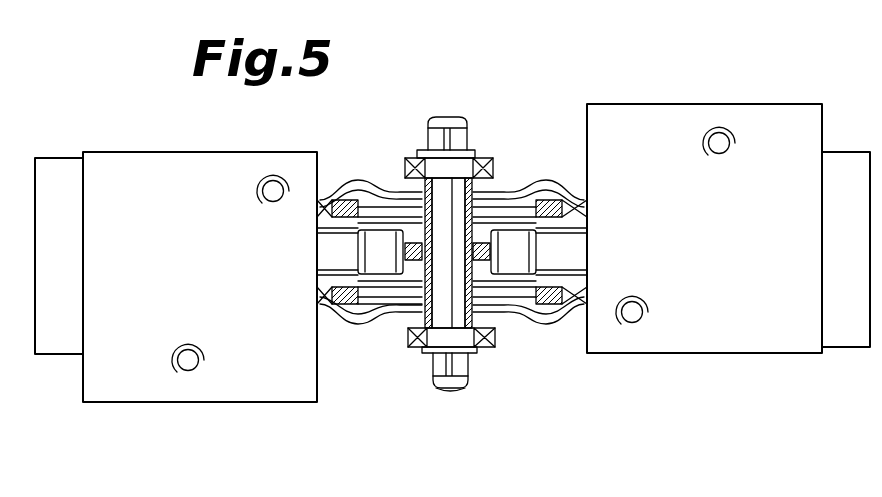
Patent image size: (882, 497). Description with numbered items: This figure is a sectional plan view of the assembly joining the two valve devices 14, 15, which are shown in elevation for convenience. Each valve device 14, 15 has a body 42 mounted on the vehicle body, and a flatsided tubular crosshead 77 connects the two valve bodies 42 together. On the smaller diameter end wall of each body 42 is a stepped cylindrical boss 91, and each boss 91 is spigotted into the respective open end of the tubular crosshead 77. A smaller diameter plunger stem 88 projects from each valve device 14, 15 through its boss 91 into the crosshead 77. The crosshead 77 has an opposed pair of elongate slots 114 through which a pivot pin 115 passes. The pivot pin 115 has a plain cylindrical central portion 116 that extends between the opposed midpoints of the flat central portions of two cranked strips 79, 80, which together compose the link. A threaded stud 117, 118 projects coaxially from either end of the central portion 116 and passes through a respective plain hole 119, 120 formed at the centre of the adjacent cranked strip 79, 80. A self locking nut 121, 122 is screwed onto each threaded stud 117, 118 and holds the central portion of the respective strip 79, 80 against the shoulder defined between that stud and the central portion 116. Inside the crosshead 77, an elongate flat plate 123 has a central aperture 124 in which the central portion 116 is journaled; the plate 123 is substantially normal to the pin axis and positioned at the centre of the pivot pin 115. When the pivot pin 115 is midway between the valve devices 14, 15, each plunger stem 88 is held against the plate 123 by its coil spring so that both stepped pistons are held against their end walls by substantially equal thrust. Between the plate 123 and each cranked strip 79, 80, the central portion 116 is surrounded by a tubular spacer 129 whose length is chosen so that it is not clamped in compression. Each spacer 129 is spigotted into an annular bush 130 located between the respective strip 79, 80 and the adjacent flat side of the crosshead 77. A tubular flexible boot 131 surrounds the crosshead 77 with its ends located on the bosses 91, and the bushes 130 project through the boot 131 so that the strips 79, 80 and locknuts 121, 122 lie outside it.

The valve device 14 is at (728, 211).
The valve device 15 is at (176, 256).
The body 42 is at (222, 160).
The flatsided tubular crosshead 77 is at (354, 206).
The cranked strip 79 is at (492, 160).
The cranked strip 80 is at (490, 338).
The plunger stem 88 is at (330, 233).
The cylindrical boss 91 is at (322, 290).
The elongate slot 114 is at (548, 208).
The pivot pin 115 is at (466, 335).
The plain cylindrical central portion 116 is at (442, 200).
The threaded stud 117 is at (480, 150).
The threaded stud 118 is at (448, 390).
The plain hole 119 is at (431, 183).
The plain hole 120 is at (438, 355).
The self locking nut 121 is at (474, 150).
The self locking nut 122 is at (441, 373).
The elongate flat plate 123 is at (560, 250).
The central aperture 124 is at (380, 335).
The tubular spacer 129 is at (543, 188).
The annular bush 130 is at (497, 190).
The tubular flexible boot 131 is at (540, 198).